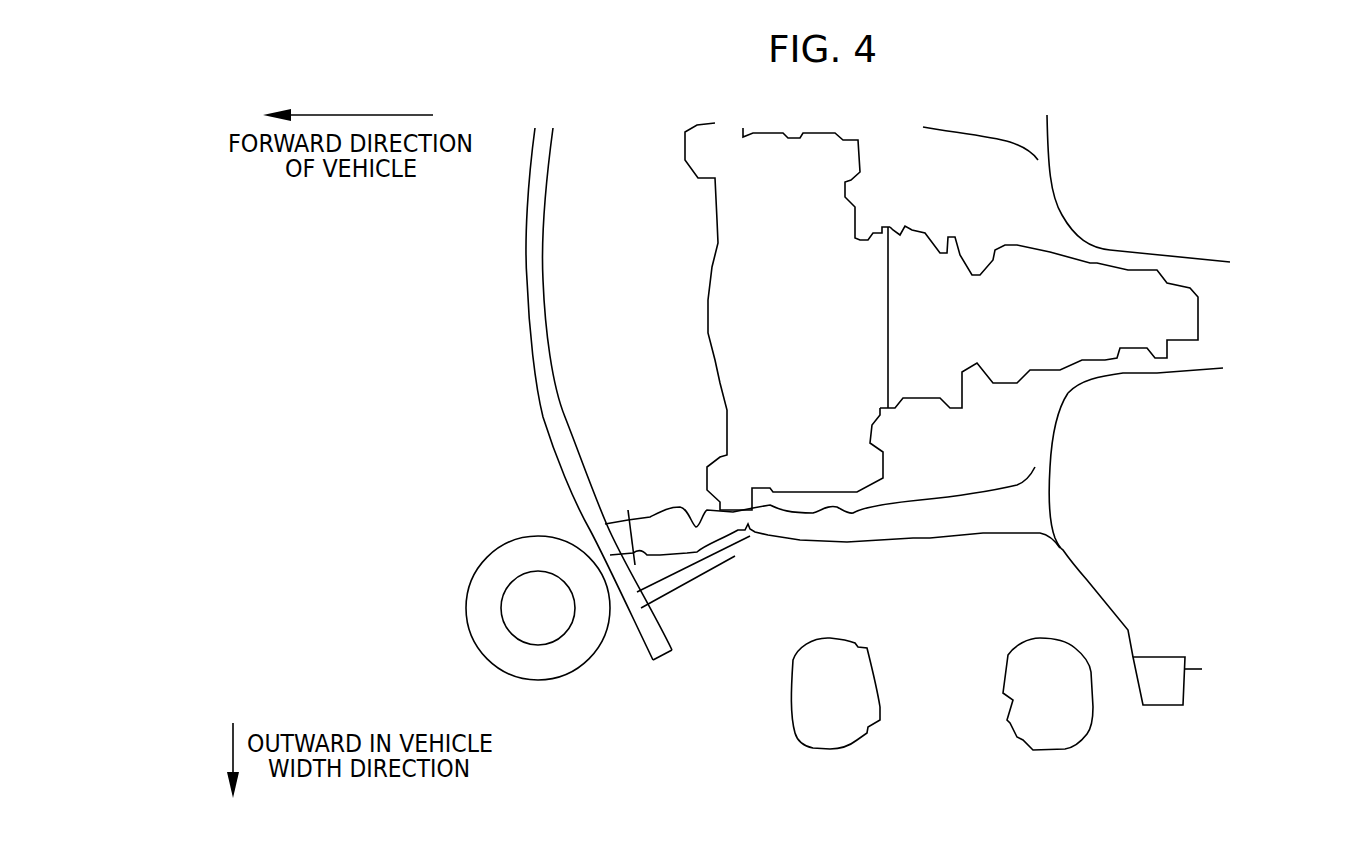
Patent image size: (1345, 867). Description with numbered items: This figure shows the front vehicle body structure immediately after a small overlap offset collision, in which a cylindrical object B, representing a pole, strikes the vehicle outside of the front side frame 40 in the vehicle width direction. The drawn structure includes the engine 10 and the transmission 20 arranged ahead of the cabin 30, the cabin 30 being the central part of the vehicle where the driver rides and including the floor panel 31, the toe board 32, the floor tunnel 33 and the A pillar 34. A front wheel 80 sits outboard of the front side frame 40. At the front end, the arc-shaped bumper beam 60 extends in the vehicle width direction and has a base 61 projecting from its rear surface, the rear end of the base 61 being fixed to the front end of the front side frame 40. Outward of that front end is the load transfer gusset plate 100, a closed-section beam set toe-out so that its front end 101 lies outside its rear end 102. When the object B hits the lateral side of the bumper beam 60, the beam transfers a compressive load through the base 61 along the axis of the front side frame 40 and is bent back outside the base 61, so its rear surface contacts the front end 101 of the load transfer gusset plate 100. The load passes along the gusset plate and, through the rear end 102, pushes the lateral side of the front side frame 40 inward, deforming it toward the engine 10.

The engine 10 is at (835, 219).
The transmission 20 is at (1075, 271).
The cabin 30 is at (1182, 533).
The floor panel 31 is at (1157, 417).
The toe board 32 is at (1055, 438).
The floor tunnel 33 is at (1203, 367).
The A pillar 34 is at (1180, 666).
The front side frame 40 is at (927, 530).
The bumper beam 60 is at (533, 283).
The base 61 is at (615, 542).
The front wheel 80 is at (1063, 733).
The load transfer gusset plate 100 is at (695, 578).
The front end 101 is at (643, 598).
The rear end 102 is at (739, 557).
The object B is at (468, 600).